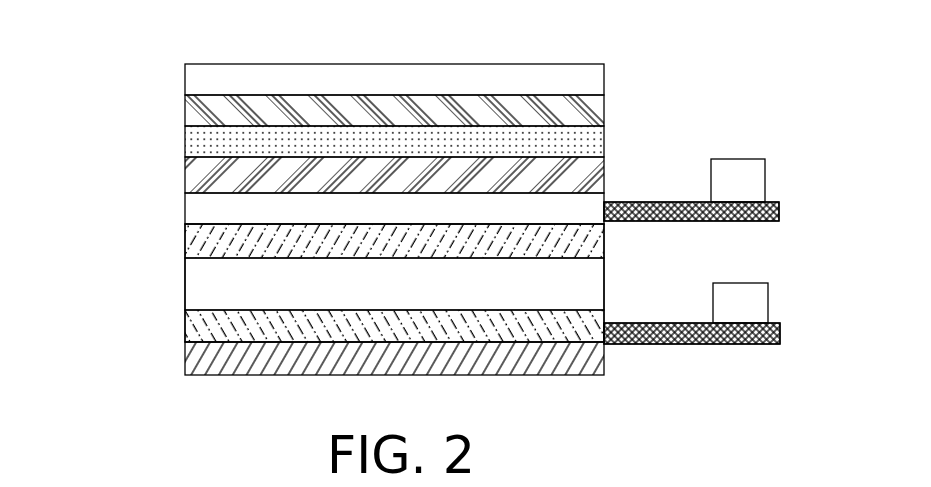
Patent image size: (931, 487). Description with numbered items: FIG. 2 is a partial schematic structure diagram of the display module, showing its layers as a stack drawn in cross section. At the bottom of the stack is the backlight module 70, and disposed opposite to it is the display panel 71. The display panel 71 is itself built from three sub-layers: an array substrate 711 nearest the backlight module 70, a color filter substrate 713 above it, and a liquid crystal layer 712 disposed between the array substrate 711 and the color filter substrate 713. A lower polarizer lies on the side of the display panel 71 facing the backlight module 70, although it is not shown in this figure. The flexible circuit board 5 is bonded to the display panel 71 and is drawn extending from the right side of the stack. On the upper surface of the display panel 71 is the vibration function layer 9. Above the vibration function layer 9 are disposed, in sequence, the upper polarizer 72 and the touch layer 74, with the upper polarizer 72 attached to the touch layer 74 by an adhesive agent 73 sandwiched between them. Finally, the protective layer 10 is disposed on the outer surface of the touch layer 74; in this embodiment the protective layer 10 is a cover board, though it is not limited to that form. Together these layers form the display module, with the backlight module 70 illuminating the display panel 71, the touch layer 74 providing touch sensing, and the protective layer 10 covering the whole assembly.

The protective layer 10 is at (195, 76).
The touch layer 74 is at (195, 111).
The adhesive agent 73 is at (195, 146).
The upper polarizer 72 is at (195, 176).
The vibration function layer 9 is at (195, 208).
The display panel 71 is at (73, 222).
The color filter substrate 713 is at (195, 242).
The liquid crystal layer 712 is at (195, 287).
The array substrate 711 is at (195, 328).
The backlight module 70 is at (195, 363).
The flexible circuit board 5 is at (779, 213).